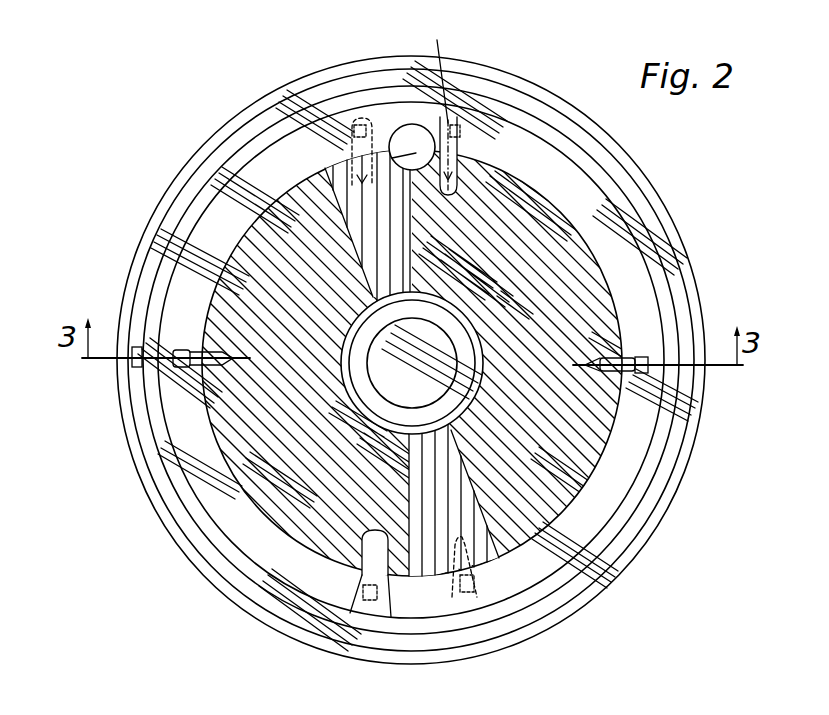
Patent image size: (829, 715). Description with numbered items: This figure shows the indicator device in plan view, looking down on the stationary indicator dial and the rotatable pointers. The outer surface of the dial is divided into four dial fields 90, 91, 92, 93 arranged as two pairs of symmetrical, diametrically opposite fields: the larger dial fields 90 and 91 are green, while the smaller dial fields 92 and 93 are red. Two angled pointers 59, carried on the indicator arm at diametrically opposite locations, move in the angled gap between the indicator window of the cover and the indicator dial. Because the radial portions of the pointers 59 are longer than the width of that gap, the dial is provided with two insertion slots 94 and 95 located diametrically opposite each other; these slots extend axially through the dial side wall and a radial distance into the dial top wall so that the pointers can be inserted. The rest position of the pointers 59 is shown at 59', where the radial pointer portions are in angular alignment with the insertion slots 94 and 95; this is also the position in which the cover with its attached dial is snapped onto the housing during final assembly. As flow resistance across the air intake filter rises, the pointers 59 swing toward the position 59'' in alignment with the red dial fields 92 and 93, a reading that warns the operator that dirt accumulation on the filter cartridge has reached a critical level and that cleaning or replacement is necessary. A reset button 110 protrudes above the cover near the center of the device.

The dial field 90 is at (537, 272).
The dial field 91 is at (288, 287).
The dial field 92 is at (480, 533).
The dial field 93 is at (360, 151).
The insertion slot 94 is at (378, 543).
The insertion slot 95 is at (440, 153).
The reset button 110 is at (340, 185).
The pointer 59 is at (412, 333).
The rest position of the pointers 59' is at (409, 362).
The warning position of the pointers 59'' is at (466, 347).